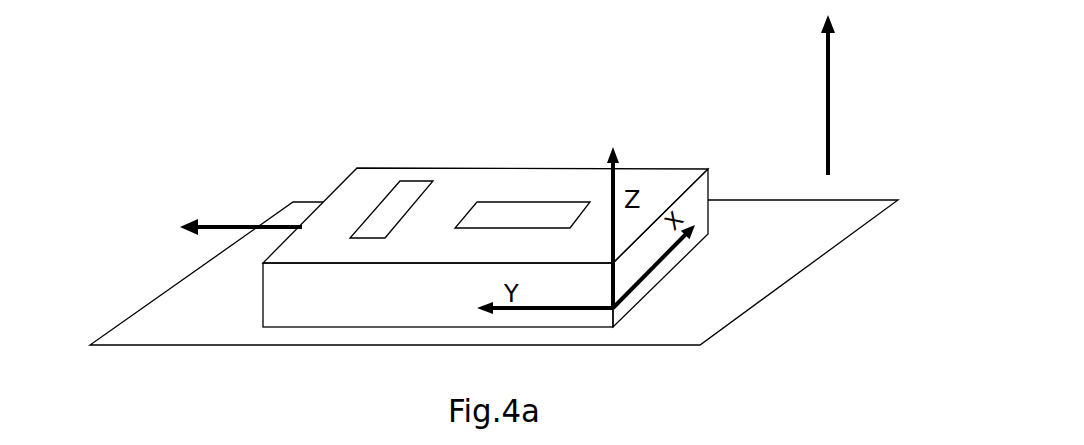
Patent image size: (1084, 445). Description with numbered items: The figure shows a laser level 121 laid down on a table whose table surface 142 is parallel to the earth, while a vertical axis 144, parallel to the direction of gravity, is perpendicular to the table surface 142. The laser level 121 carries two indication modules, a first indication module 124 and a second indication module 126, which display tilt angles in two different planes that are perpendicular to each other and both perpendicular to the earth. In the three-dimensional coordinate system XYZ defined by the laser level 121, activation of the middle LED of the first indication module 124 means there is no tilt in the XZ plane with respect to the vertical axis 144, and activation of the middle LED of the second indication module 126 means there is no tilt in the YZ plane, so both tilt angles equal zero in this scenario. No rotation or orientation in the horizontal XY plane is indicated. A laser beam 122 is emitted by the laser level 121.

The laser level 121 is at (357, 168).
The laser beam 122 is at (243, 223).
The first indication module 124 is at (433, 181).
The second indication module 126 is at (525, 201).
The table surface 142 is at (745, 248).
The vertical axis 144 is at (798, 95).